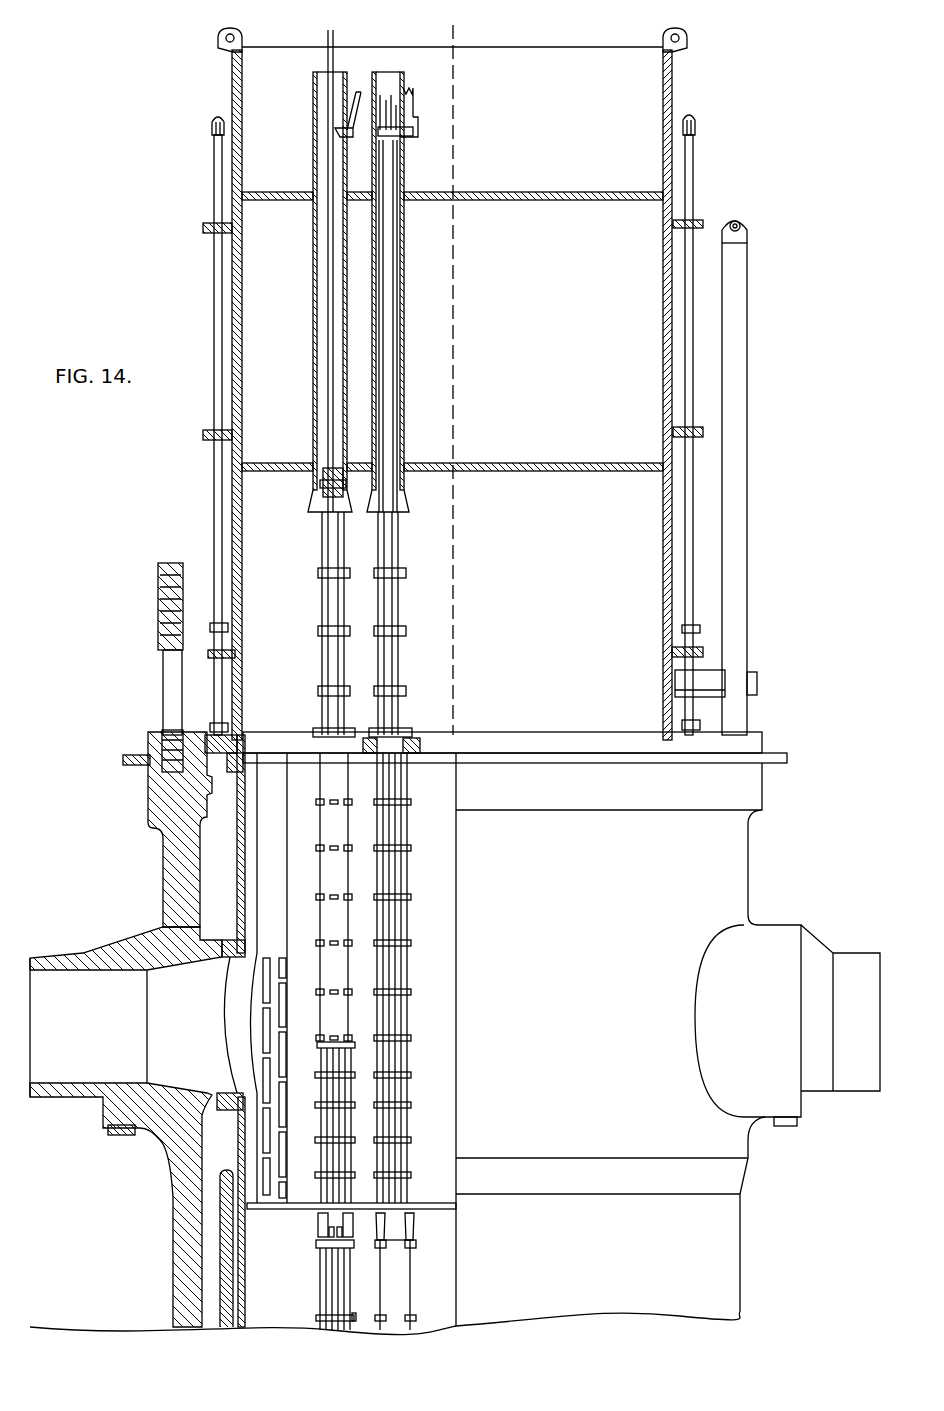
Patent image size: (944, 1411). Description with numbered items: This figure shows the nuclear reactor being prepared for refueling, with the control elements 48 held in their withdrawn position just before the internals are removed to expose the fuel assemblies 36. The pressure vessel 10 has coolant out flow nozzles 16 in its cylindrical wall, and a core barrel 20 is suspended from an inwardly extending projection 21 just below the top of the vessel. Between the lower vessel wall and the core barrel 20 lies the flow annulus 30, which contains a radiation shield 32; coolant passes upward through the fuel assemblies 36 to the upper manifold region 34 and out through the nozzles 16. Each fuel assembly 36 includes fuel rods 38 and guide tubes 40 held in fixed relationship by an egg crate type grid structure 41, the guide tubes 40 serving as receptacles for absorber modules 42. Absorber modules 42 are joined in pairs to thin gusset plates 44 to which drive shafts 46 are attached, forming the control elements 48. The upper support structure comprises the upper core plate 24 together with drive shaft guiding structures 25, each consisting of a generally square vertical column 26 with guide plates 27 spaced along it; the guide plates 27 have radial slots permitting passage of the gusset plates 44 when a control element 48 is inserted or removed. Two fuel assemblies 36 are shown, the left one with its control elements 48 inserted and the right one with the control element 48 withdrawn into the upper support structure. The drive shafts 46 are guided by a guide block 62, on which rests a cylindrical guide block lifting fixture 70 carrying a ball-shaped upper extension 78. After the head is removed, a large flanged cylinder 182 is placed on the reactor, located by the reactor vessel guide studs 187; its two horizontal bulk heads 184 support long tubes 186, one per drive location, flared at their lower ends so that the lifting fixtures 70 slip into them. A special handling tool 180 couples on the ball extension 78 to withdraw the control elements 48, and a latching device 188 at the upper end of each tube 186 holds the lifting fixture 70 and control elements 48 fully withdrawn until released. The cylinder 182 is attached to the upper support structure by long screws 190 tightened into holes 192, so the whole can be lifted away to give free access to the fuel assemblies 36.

The pressure vessel 10 is at (173, 1212).
The coolant out flow nozzle 16 is at (108, 940).
The core barrel 20 is at (237, 893).
The inwardly extending projection 21 is at (213, 780).
The upper core plate 24 is at (437, 1203).
The drive shaft guiding structure 25 is at (321, 1030).
The vertical column 26 is at (411, 972).
The guide plate 27 is at (376, 1038).
The flow annulus 30 is at (212, 1110).
The radiation shield 32 is at (220, 1250).
The upper manifold region 34 is at (447, 930).
The fuel assembly 36 is at (382, 1278).
The fuel rod 38 is at (322, 1262).
The guide tube 40 is at (330, 1282).
The grid structure 41 is at (350, 1317).
The absorber module 42 is at (407, 1058).
The gusset plate 44 is at (318, 1224).
The drive shaft 46 is at (395, 530).
The control element 48 is at (449, 852).
The guide block 62 is at (323, 490).
The guide block lifting fixture 70 is at (386, 128).
The ball-shaped upper extension 78 is at (383, 100).
The handling tool 180 is at (333, 40).
The flanged cylinder 182 is at (673, 88).
The horizontal bulk head 184 is at (595, 200).
The tube 186 is at (316, 312).
The reactor vessel guide stud 187 is at (740, 377).
The latching device 188 is at (437, 118).
The long screw 190 is at (693, 567).
The hole 192 is at (207, 737).